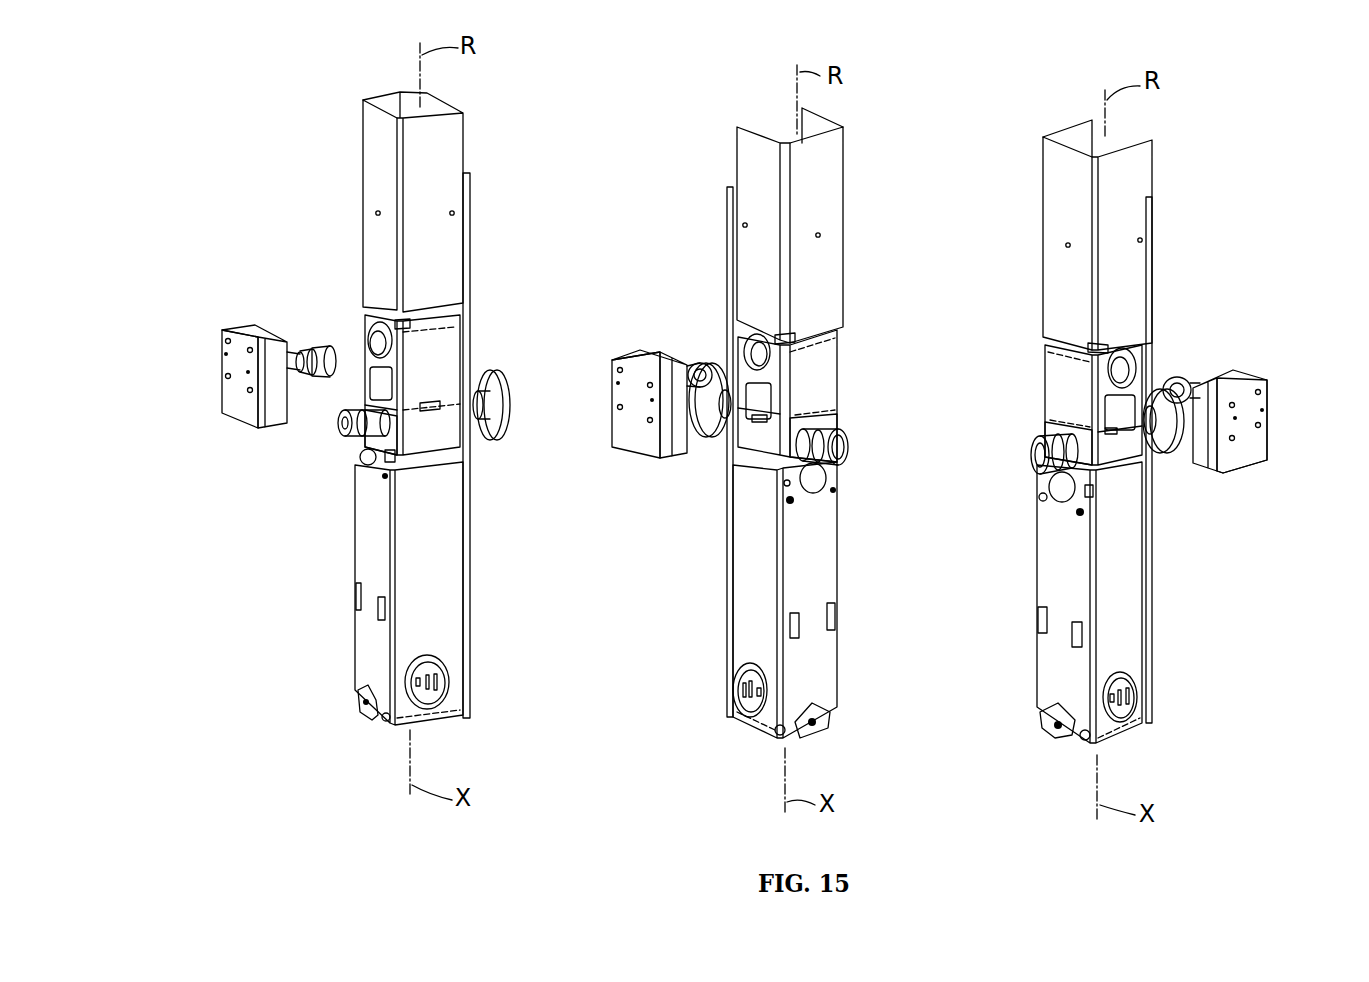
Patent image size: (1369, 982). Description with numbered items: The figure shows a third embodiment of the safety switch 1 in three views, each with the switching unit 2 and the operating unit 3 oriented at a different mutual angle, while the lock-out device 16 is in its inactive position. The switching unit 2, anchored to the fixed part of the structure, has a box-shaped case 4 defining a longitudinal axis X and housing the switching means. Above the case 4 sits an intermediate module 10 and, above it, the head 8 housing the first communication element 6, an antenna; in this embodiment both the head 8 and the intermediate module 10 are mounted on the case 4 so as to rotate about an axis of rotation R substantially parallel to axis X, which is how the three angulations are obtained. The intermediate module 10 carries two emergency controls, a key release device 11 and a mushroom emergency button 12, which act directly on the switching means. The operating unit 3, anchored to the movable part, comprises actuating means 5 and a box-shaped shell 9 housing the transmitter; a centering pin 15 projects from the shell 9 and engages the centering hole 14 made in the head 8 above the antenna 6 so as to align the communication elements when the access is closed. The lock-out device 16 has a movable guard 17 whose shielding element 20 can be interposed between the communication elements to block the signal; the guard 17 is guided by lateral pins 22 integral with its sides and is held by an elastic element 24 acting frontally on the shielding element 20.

The safety switch 1 is at (741, 397).
The switching unit 2 is at (755, 397).
The operating unit 3 is at (741, 407).
The box-shaped case 4 is at (452, 608).
The actuating means 5 is at (262, 432).
The first communication element 6 is at (378, 385).
The head 8 is at (748, 397).
The box-shaped shell 9 is at (225, 398).
The intermediate module 10 is at (440, 428).
The key release device 11 is at (345, 435).
The mushroom emergency button 12 is at (510, 408).
The centering hole 14 is at (367, 335).
The centering pin 15 is at (316, 338).
The lock-out device 16 is at (772, 195).
The guard 17 is at (470, 140).
The shielding element 20 is at (373, 162).
The lateral pins 22 is at (455, 213).
The elastic element 24 is at (375, 213).